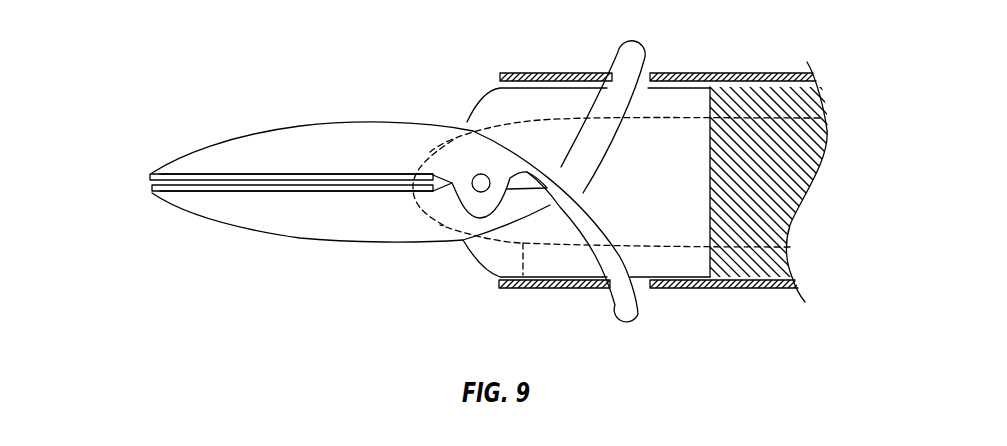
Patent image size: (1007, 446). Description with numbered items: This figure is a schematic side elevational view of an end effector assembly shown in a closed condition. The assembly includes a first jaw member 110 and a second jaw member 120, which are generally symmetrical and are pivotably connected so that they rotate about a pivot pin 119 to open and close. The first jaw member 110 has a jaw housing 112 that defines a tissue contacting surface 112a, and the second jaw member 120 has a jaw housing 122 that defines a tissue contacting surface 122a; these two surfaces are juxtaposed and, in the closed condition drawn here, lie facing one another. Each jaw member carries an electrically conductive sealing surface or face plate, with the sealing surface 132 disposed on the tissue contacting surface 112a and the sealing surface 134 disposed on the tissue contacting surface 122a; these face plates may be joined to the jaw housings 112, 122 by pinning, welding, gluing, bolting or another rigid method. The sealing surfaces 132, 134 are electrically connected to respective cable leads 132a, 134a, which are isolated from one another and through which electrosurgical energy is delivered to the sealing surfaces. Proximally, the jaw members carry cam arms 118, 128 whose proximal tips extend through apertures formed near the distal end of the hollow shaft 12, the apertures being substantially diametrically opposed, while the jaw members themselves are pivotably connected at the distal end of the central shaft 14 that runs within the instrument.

The hollow shaft 12 is at (755, 73).
The central shaft 14 is at (790, 131).
The first jaw member 110 is at (312, 131).
The jaw housing 112 is at (373, 133).
The tissue contacting surface 112a is at (224, 179).
The cam arm 118 is at (610, 235).
The pivot pin 119 is at (480, 173).
The second jaw member 120 is at (290, 235).
The jaw housing 122 is at (371, 236).
The tissue contacting surface 122a is at (208, 186).
The cam arm 128 is at (610, 125).
The electrically conductive sealing surface 132 is at (150, 177).
The cable lead 132a is at (663, 118).
The electrically conductive sealing surface 134 is at (150, 188).
The cable lead 134a is at (523, 275).